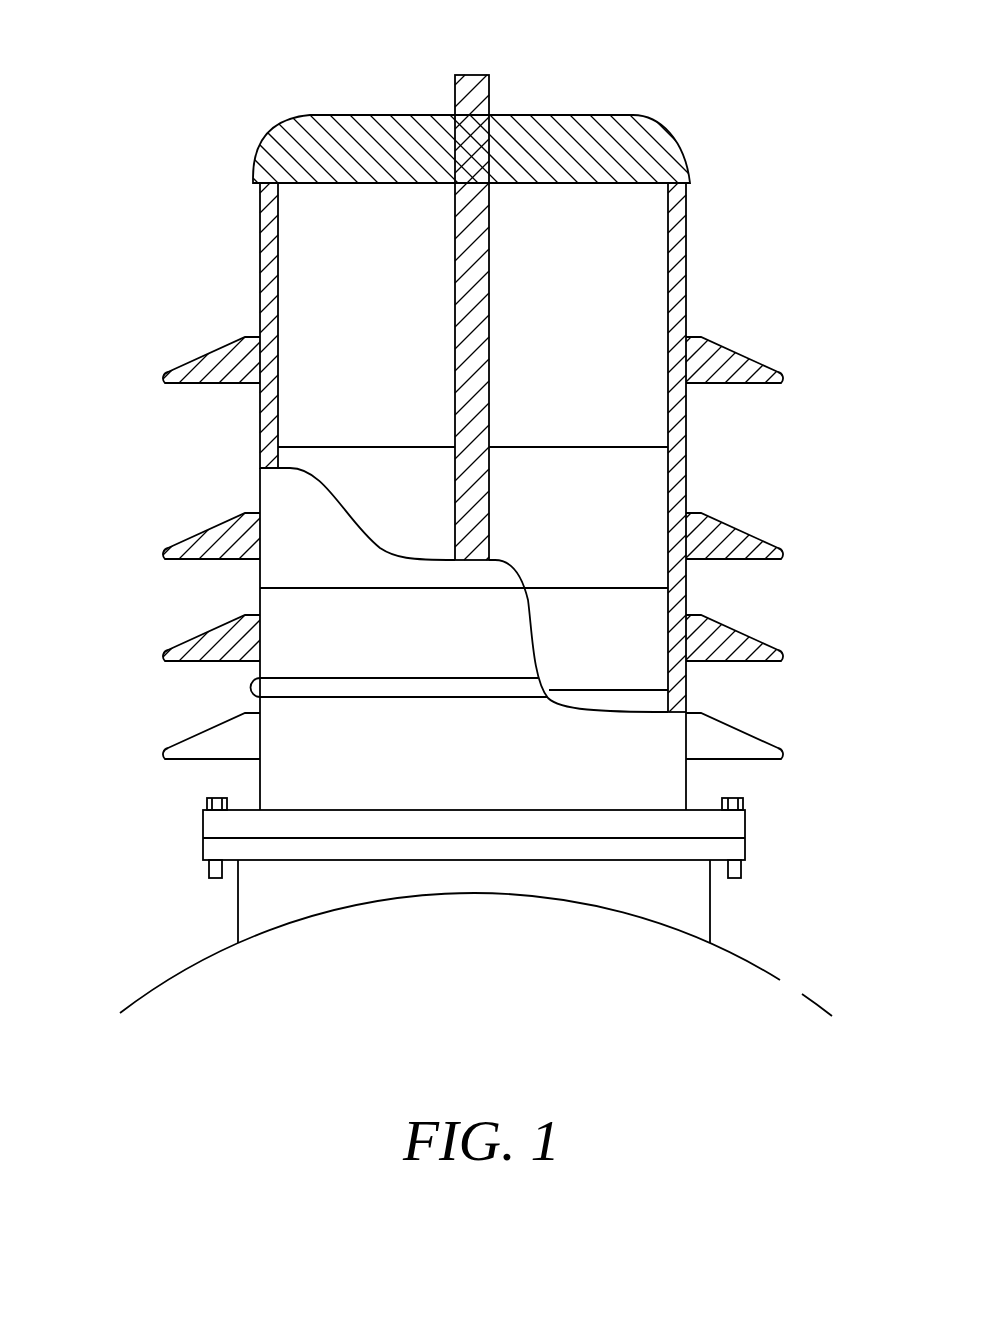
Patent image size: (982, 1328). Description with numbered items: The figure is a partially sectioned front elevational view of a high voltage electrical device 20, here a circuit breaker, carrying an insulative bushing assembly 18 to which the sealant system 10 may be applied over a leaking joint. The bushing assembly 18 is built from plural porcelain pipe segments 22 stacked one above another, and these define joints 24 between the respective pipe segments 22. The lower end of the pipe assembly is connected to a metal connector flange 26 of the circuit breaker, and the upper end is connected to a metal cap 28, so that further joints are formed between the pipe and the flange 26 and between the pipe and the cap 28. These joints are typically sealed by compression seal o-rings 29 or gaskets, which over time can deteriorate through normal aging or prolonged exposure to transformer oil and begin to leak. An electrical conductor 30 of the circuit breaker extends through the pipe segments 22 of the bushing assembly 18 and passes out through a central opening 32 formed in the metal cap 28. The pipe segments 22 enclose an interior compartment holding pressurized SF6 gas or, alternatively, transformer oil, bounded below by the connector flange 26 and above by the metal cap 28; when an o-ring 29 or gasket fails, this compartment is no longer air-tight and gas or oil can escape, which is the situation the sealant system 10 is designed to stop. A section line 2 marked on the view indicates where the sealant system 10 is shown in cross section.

The section line 2- 2 is at (302, 740).
The sealant system 10 is at (497, 723).
The bushing assembly 18 is at (168, 269).
The high voltage electrical device 20 is at (752, 962).
The porcelain pipe segments 22 is at (687, 297).
The joints 24 is at (688, 187).
The metal connector flange 26 is at (703, 810).
The metal cap 28 is at (675, 143).
The compression seal o-rings 29 is at (547, 447).
The electrical conductor 30 is at (490, 297).
The central opening 32 is at (490, 147).